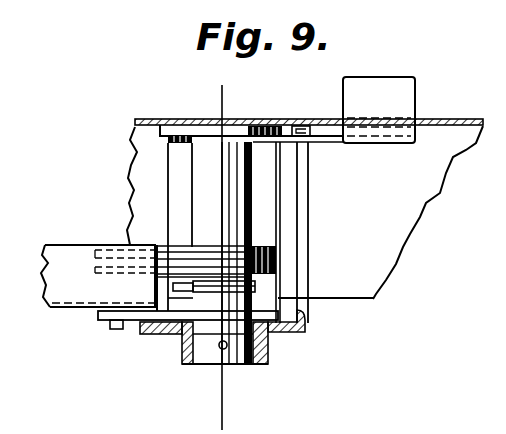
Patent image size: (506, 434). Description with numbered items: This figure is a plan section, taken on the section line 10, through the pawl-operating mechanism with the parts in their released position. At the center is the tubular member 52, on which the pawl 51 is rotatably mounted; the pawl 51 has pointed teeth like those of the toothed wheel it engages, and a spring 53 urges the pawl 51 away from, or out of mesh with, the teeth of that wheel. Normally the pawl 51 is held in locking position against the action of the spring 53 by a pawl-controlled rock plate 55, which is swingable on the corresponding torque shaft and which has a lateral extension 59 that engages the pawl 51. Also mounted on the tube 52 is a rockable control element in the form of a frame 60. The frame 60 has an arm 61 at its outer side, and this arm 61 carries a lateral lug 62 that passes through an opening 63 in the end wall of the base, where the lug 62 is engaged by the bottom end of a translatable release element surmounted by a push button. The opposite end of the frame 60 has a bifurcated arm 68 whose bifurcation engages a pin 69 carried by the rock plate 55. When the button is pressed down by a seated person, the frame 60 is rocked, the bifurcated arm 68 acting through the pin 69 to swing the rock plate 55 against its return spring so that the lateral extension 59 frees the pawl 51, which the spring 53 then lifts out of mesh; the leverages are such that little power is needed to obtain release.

The section line 10 is at (240, 95).
The pawl 51 is at (207, 260).
The tubular member 52 is at (226, 178).
The spring 53 is at (193, 292).
The rock plate 55 is at (76, 302).
The lateral extension 59 is at (85, 258).
The frame 60 is at (182, 182).
The arm 61 is at (310, 140).
The lateral lug 62 is at (406, 110).
The opening 63 is at (451, 122).
The bifurcated arm 68 is at (140, 320).
The pin 69 is at (115, 329).